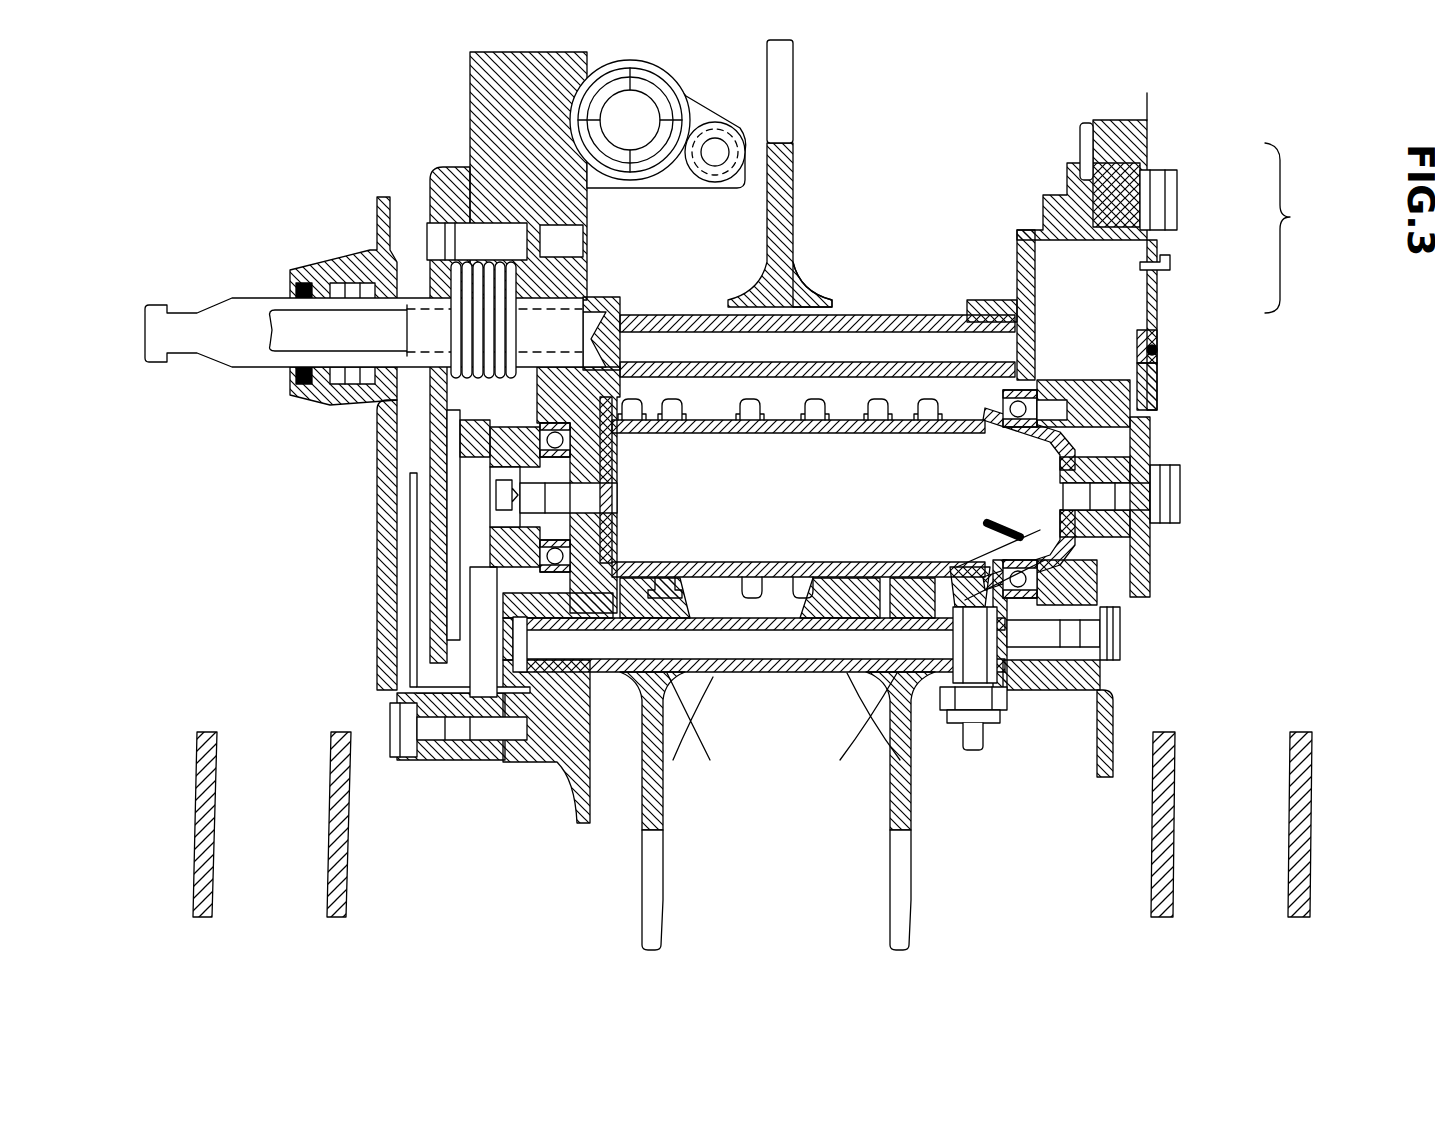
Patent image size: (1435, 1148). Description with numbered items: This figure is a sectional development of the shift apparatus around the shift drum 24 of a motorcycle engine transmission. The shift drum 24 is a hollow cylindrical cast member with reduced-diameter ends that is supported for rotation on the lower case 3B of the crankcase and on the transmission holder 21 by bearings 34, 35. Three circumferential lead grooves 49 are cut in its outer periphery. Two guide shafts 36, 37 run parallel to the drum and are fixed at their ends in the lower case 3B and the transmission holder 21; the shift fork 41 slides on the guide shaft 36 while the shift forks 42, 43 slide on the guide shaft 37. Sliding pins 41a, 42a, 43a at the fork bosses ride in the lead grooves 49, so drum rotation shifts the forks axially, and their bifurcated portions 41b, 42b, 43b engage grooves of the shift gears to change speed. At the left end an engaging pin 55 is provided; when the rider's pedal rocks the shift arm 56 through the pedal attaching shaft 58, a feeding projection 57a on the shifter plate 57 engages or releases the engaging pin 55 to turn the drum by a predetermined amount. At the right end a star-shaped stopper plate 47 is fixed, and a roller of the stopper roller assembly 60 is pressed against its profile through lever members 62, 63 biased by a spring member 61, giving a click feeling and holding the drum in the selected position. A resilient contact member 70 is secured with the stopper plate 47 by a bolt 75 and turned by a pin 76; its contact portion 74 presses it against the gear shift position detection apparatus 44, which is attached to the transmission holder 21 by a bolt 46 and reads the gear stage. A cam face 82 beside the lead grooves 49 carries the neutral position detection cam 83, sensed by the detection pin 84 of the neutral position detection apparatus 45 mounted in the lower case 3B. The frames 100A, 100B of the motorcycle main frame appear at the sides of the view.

The lower case 3B is at (573, 800).
The transmission holder 21 is at (1107, 757).
The shift drum 24 is at (847, 463).
The bearing 34 is at (1150, 380).
The bearing 35 is at (430, 415).
The guide shaft 36 is at (975, 400).
The guide shaft 37 is at (777, 582).
The shift fork 41 is at (807, 110).
The sliding pin 41a is at (765, 405).
The bifurcated portion 41b is at (780, 65).
The shift fork 42 is at (927, 843).
The sliding pin 42a is at (893, 675).
The bifurcated portion 42b is at (897, 913).
The shift fork 43 is at (623, 833).
The sliding pin 43a is at (640, 695).
The bifurcated portion 43b is at (657, 913).
The gear shift position detection apparatus 44 is at (1080, 632).
The neutral position detection apparatus 45 is at (1003, 717).
The bolt 46 is at (1095, 650).
The stopper plate 47 is at (1150, 543).
The lead grooves 49 is at (920, 340).
The engaging pin 55 is at (430, 613).
The shift arm 56 is at (423, 497).
The shifter plate 57 is at (463, 520).
The feeding projection 57a is at (500, 547).
The pedal attaching shaft 58 is at (232, 323).
The stopper roller assembly 60 is at (1172, 251).
The spring member 61 is at (1127, 150).
The lever member 62 is at (1163, 270).
The lever member 63 is at (1157, 350).
The resilient contact member 70 is at (1150, 392).
The contact portion 74 is at (1153, 433).
The bolt 75 is at (1130, 497).
The pin 76 is at (1165, 478).
The cam face 82 is at (977, 597).
The neutral position detection cam 83 is at (973, 590).
The detection pin 84 is at (1000, 722).
The frame 100A is at (1317, 780).
The frame 100B is at (195, 780).